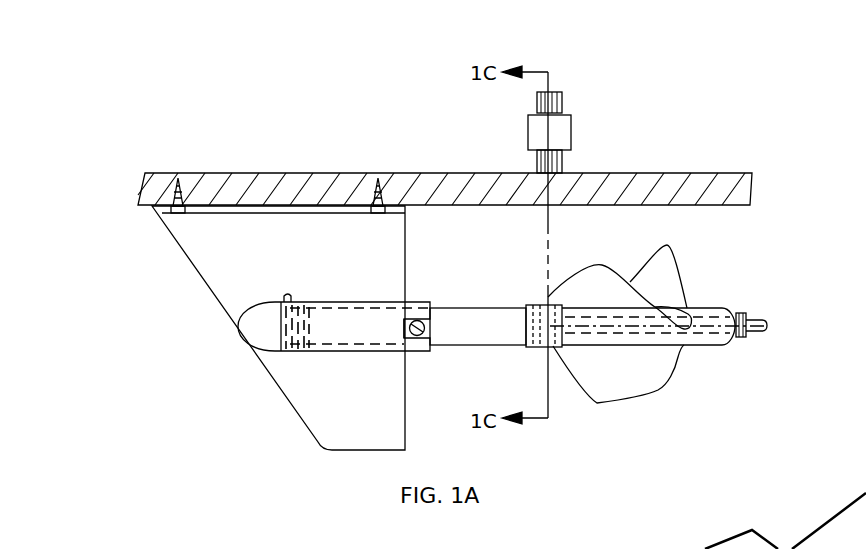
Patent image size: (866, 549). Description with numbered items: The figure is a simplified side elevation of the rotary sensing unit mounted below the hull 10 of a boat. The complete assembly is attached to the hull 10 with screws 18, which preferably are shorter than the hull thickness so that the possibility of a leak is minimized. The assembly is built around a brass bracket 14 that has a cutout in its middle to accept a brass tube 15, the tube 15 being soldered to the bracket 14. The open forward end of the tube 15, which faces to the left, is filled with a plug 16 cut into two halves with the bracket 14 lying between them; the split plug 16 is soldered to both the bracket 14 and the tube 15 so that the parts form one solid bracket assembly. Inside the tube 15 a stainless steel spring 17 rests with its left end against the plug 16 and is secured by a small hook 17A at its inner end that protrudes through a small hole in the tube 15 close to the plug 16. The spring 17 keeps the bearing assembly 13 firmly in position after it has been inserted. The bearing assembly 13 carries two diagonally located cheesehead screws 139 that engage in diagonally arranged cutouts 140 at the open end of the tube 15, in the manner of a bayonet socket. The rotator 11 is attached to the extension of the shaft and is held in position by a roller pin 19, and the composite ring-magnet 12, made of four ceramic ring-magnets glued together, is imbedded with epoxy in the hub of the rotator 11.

The hull 10 is at (426, 174).
The rotator 11 is at (640, 393).
The composite ring-magnet 12 is at (546, 352).
The bearing assembly 13 is at (468, 346).
The brass bracket 14 is at (220, 305).
The brass tube 15 is at (417, 303).
The plug 16 is at (262, 310).
The spring 17 is at (295, 352).
The hook 17A is at (291, 298).
The screws 18 is at (178, 214).
The roller pin 19 is at (745, 335).
The screws 139 is at (425, 321).
The cutouts 140 is at (426, 333).